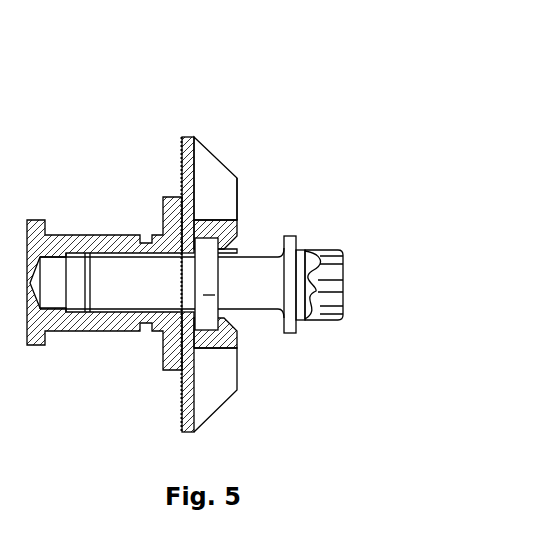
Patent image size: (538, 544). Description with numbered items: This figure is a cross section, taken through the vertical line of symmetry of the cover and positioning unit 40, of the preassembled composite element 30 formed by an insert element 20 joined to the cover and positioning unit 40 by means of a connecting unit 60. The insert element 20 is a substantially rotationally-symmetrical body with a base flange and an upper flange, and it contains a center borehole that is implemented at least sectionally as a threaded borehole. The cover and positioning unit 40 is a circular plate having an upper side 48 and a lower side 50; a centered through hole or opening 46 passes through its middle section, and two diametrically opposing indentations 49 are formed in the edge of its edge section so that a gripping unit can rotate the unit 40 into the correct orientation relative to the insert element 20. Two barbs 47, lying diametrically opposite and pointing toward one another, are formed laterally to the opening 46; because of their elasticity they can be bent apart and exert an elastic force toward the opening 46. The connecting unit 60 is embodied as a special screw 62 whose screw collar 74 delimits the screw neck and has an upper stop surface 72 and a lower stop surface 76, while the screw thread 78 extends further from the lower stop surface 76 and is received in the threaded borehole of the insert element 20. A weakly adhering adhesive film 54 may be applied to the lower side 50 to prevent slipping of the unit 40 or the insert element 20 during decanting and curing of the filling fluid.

The insert element 20 is at (69, 186).
The fastener assembly 30 is at (239, 88).
The cover and positioning unit 40 is at (230, 151).
The opening 46 is at (233, 247).
The barbs 47 is at (227, 245).
The upper side 48 is at (238, 213).
The indentations 49 is at (20, 287).
The lower side 50 is at (182, 392).
The adhesive film 54 is at (182, 155).
The connecting unit 60 is at (285, 198).
The special screw 62 is at (280, 352).
The upper stop surface 72 is at (196, 267).
The screw collar 74 is at (204, 295).
The lower stop surface 76 is at (196, 267).
The screw thread 78 is at (103, 308).